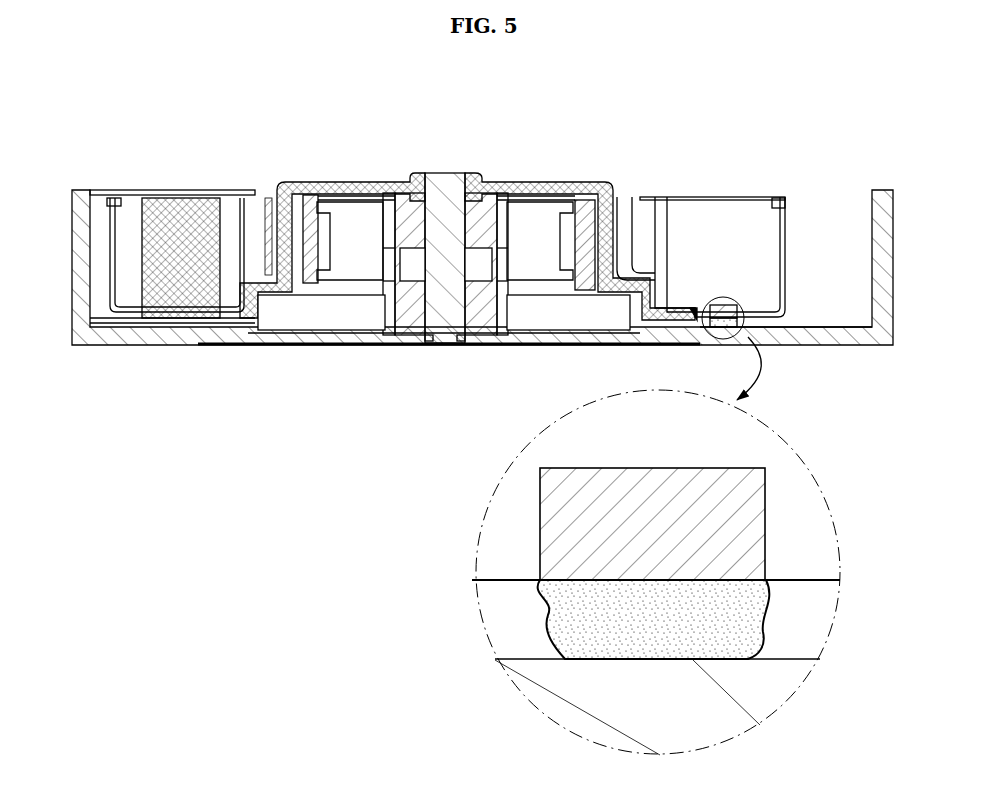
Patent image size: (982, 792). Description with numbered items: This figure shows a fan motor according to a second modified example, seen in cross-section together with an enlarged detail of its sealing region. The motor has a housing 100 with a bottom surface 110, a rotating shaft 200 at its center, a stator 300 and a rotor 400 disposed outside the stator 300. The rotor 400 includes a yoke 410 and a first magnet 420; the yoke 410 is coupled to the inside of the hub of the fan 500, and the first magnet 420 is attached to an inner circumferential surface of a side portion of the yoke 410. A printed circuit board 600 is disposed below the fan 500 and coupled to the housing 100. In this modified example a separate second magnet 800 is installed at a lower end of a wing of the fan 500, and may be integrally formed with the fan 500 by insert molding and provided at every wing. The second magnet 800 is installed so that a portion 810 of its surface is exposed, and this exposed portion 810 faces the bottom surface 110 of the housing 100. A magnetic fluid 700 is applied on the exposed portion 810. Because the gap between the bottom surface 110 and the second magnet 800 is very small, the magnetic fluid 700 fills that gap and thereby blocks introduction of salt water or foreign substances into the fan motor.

The housing 100 is at (72, 184).
The bottom surface of housing 110 is at (806, 330).
The rotating shaft 200 is at (445, 185).
The stator 300 is at (343, 216).
The rotor 400 is at (468, 203).
The yoke 410 is at (614, 190).
The first magnet 420 is at (458, 207).
The fan 500 is at (719, 228).
The printed circuit board 600 is at (318, 314).
The magnetic fluid 700 is at (573, 622).
The second magnet 800 is at (562, 504).
The exposed portion of second magnet surface 810 is at (573, 583).